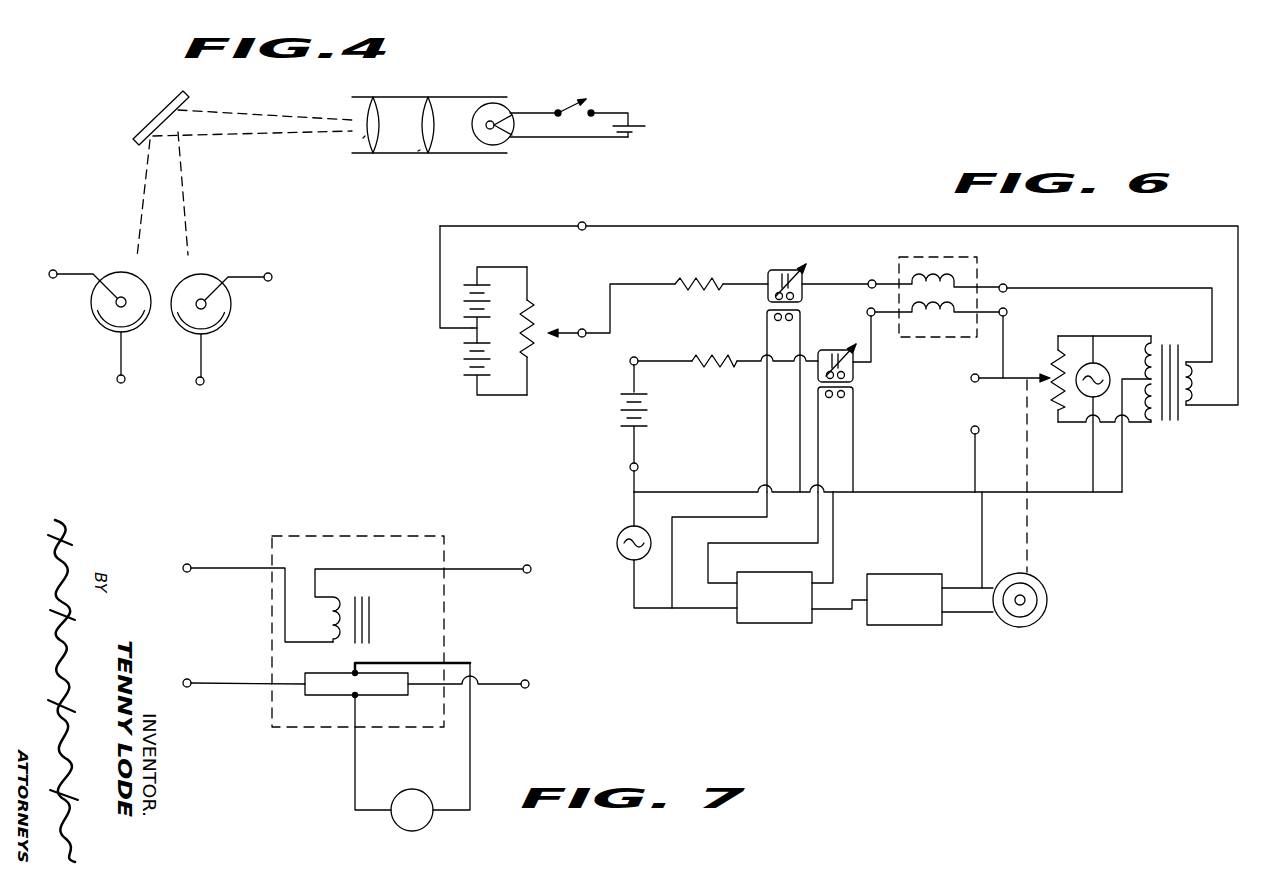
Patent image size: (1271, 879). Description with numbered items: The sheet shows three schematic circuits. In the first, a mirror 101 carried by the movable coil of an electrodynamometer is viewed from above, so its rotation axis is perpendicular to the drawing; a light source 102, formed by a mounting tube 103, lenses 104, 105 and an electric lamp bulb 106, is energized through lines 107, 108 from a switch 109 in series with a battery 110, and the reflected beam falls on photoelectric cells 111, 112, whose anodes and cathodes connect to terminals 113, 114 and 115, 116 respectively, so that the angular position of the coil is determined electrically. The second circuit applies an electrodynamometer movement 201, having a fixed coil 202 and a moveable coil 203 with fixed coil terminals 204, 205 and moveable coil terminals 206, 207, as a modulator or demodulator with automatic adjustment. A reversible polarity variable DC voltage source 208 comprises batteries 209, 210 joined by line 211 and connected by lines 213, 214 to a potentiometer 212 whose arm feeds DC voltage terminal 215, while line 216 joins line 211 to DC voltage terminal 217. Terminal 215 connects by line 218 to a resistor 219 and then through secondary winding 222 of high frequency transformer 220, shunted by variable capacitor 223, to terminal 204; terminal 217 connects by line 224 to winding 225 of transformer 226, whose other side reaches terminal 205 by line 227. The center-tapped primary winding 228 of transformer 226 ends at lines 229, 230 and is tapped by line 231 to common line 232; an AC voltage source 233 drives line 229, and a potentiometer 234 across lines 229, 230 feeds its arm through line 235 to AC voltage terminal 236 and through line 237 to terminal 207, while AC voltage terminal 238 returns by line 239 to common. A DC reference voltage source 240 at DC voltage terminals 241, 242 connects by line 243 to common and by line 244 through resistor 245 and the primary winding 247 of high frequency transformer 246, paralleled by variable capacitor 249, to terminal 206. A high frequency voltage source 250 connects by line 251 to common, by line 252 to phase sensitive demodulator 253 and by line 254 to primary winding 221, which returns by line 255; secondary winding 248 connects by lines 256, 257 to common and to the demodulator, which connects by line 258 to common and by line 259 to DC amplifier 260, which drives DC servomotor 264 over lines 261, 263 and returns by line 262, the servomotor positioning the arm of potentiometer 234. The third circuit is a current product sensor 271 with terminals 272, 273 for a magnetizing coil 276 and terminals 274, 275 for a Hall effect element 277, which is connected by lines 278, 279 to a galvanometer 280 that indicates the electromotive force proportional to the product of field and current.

In FIG. 4, the mirror 101 is at (158, 112).
In FIG. 4, the light source 102 is at (420, 97).
In FIG. 4, the mounting tube 103 is at (488, 97).
In FIG. 4, the lens 104 is at (364, 137).
In FIG. 4, the lens 105 is at (418, 150).
In FIG. 4, the electric lamp bulb 106 is at (478, 140).
In FIG. 4, the line 107 is at (553, 108).
In FIG. 4, the line 108 is at (566, 139).
In FIG. 4, the switch 109 is at (576, 100).
In FIG. 4, the battery 110 is at (638, 124).
In FIG. 4, the photoelectric cell 111 is at (98, 323).
In FIG. 4, the photoelectric cell 112 is at (233, 310).
In FIG. 4, the terminal 113 is at (74, 242).
In FIG. 4, the terminal 114 is at (117, 379).
In FIG. 4, the terminal 115 is at (282, 240).
In FIG. 4, the terminal 116 is at (206, 378).
In FIG. 6, the electrodynamometer movement 201 is at (977, 257).
In FIG. 6, the fixed coil 202 is at (957, 280).
In FIG. 6, the moveable coil 203 is at (955, 316).
In FIG. 6, the fixed coil terminal 204 is at (871, 280).
In FIG. 6, the fixed coil terminal 205 is at (1007, 284).
In FIG. 6, the moveable coil terminal 206 is at (868, 309).
In FIG. 6, the moveable coil terminal 207 is at (1007, 311).
In FIG. 6, the reversible polarity variable DC voltage source 208 is at (503, 242).
In FIG. 6, the battery 209 is at (462, 300).
In FIG. 6, the battery 210 is at (466, 366).
In FIG. 6, the line 211 is at (473, 333).
In FIG. 6, the potentiometer 212 is at (533, 320).
In FIG. 6, the line 213 is at (530, 267).
In FIG. 6, the line 214 is at (527, 396).
In FIG. 6, the DC voltage terminal 215 is at (583, 337).
In FIG. 6, the line 216 is at (440, 266).
In FIG. 6, the DC voltage terminal 217 is at (585, 223).
In FIG. 6, the line 218 is at (612, 284).
In FIG. 6, the resistor 219 is at (716, 278).
In FIG. 6, the high frequency transformer 220 is at (768, 312).
In FIG. 6, the primary winding 221 is at (768, 330).
In FIG. 6, the secondary winding 222 is at (768, 298).
In FIG. 6, the variable capacitor 223 is at (768, 245).
In FIG. 6, the line 224 is at (842, 226).
In FIG. 6, the secondary winding 225 is at (1190, 418).
In FIG. 6, the transformer 226 is at (1180, 352).
In FIG. 6, the line 227 is at (1180, 288).
In FIG. 6, the center-tapped primary winding 228 is at (1150, 424).
In FIG. 6, the line 229 is at (1150, 337).
In FIG. 6, the line 230 is at (1068, 424).
In FIG. 6, the line 231 is at (1122, 481).
In FIG. 6, the common line 232 is at (1062, 496).
In FIG. 6, the AC voltage source 233 is at (1100, 372).
In FIG. 6, the potentiometer 234 is at (1053, 360).
In FIG. 6, the line 235 is at (1012, 382).
In FIG. 6, the AC voltage terminal 236 is at (978, 357).
In FIG. 6, the line 237 is at (1004, 345).
In FIG. 6, the AC voltage terminal 238 is at (992, 420).
In FIG. 6, the line 239 is at (976, 484).
In FIG. 6, the DC reference voltage source 240 is at (630, 432).
In FIG. 6, the DC voltage terminal 241 is at (637, 357).
In FIG. 6, the DC voltage terminal 242 is at (640, 468).
In FIG. 6, the line 243 is at (630, 478).
In FIG. 6, the line 244 is at (645, 366).
In FIG. 6, the resistor 245 is at (736, 365).
In FIG. 6, the high frequency transformer 246 is at (855, 398).
In FIG. 6, the primary winding 247 is at (855, 381).
In FIG. 6, the secondary winding 248 is at (860, 406).
In FIG. 6, the variable capacitor 249 is at (834, 350).
In FIG. 6, the high frequency voltage source 250 is at (616, 543).
In FIG. 6, the line 251 is at (632, 495).
In FIG. 6, the line 252 is at (622, 600).
In FIG. 6, the phase sensitive demodulator 253 is at (760, 624).
In FIG. 6, the line 254 is at (672, 608).
In FIG. 6, the line 255 is at (797, 434).
In FIG. 6, the line 256 is at (853, 476).
In FIG. 6, the line 257 is at (818, 444).
In FIG. 6, the line 258 is at (836, 522).
In FIG. 6, the line 259 is at (836, 612).
In FIG. 6, the DC amplifier 260 is at (926, 626).
In FIG. 6, the line 261 is at (967, 556).
In FIG. 6, the line 262 is at (982, 521).
In FIG. 6, the line 263 is at (980, 614).
In FIG. 6, the DC servomotor 264 is at (1048, 602).
In FIG. 7, the current product sensor 271 is at (352, 536).
In FIG. 7, the terminal 272 is at (189, 564).
In FIG. 7, the terminal 273 is at (530, 574).
In FIG. 7, the terminal 274 is at (189, 679).
In FIG. 7, the terminal 275 is at (534, 662).
In FIG. 7, the magnetizing coil 276 is at (340, 598).
In FIG. 7, the Hall effect element 277 is at (350, 697).
In FIG. 7, the line 278 is at (355, 766).
In FIG. 7, the line 279 is at (471, 752).
In FIG. 7, the galvanometer 280 is at (394, 822).